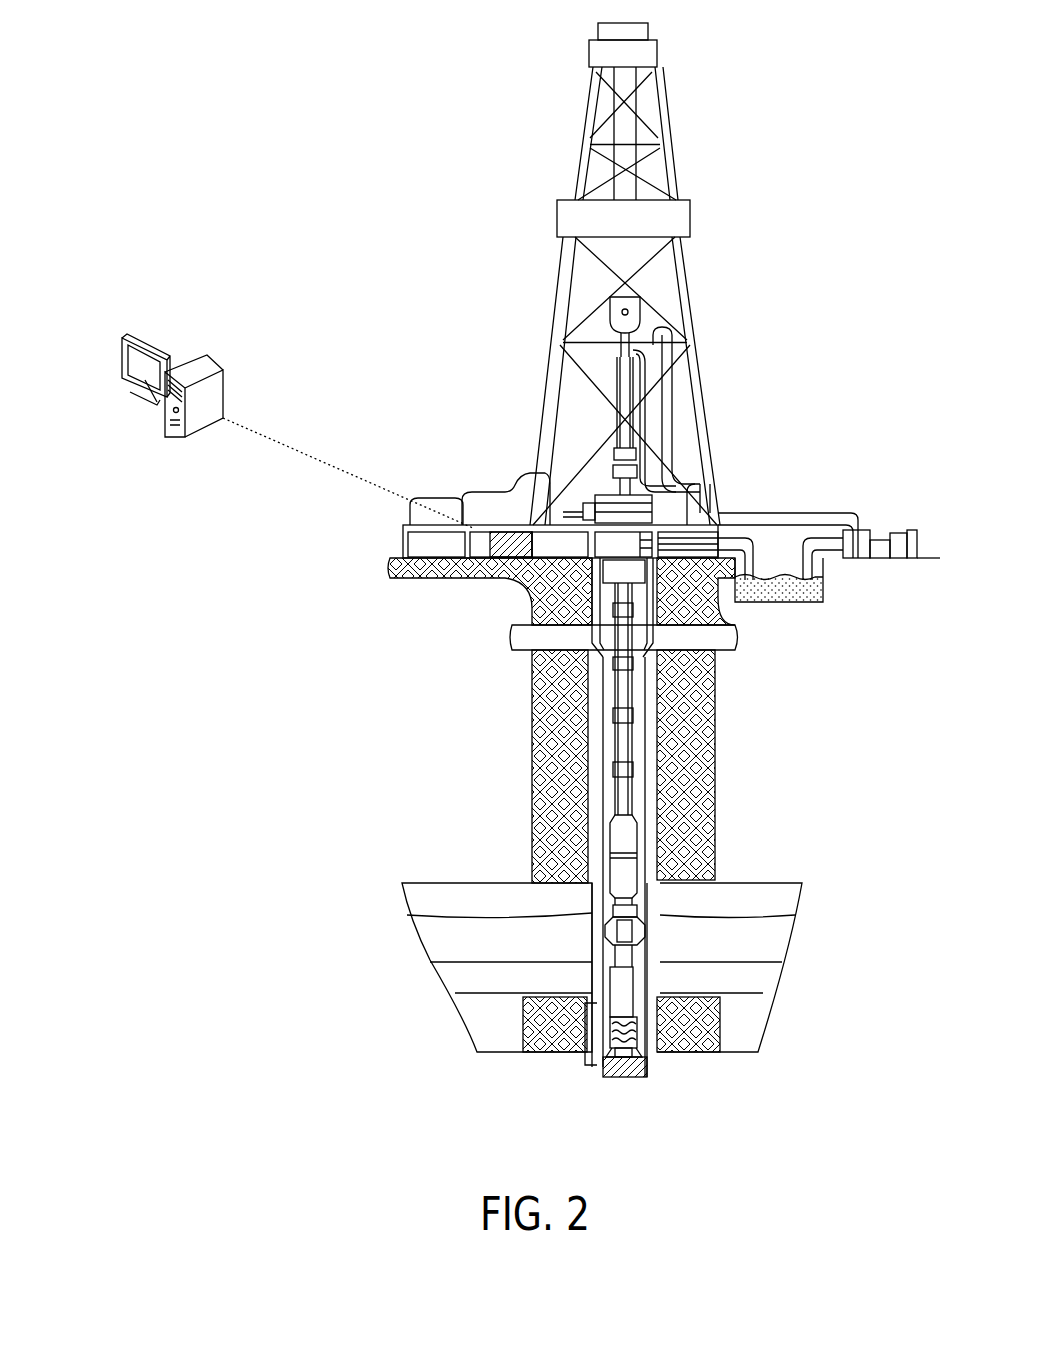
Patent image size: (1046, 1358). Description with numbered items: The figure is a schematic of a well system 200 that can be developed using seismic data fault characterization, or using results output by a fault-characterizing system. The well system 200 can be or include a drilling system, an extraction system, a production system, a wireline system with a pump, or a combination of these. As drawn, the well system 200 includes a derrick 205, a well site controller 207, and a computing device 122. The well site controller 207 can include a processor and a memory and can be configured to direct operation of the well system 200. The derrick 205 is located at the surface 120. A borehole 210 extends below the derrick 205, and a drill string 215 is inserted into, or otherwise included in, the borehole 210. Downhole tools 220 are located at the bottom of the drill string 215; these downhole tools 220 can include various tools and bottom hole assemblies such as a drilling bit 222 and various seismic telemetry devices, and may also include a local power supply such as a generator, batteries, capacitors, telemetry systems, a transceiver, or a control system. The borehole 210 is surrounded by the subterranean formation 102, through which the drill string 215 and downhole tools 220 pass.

The well system 200 is at (242, 81).
The derrick 205 is at (687, 270).
The well site controller 207 is at (490, 550).
The surface 120 is at (385, 570).
The computing device 122 is at (123, 350).
The borehole 210 is at (657, 602).
The drill string 215 is at (637, 838).
The downhole tools 220 is at (583, 1033).
The drilling bit 222 is at (603, 1068).
The subterranean formation 102 is at (729, 1017).